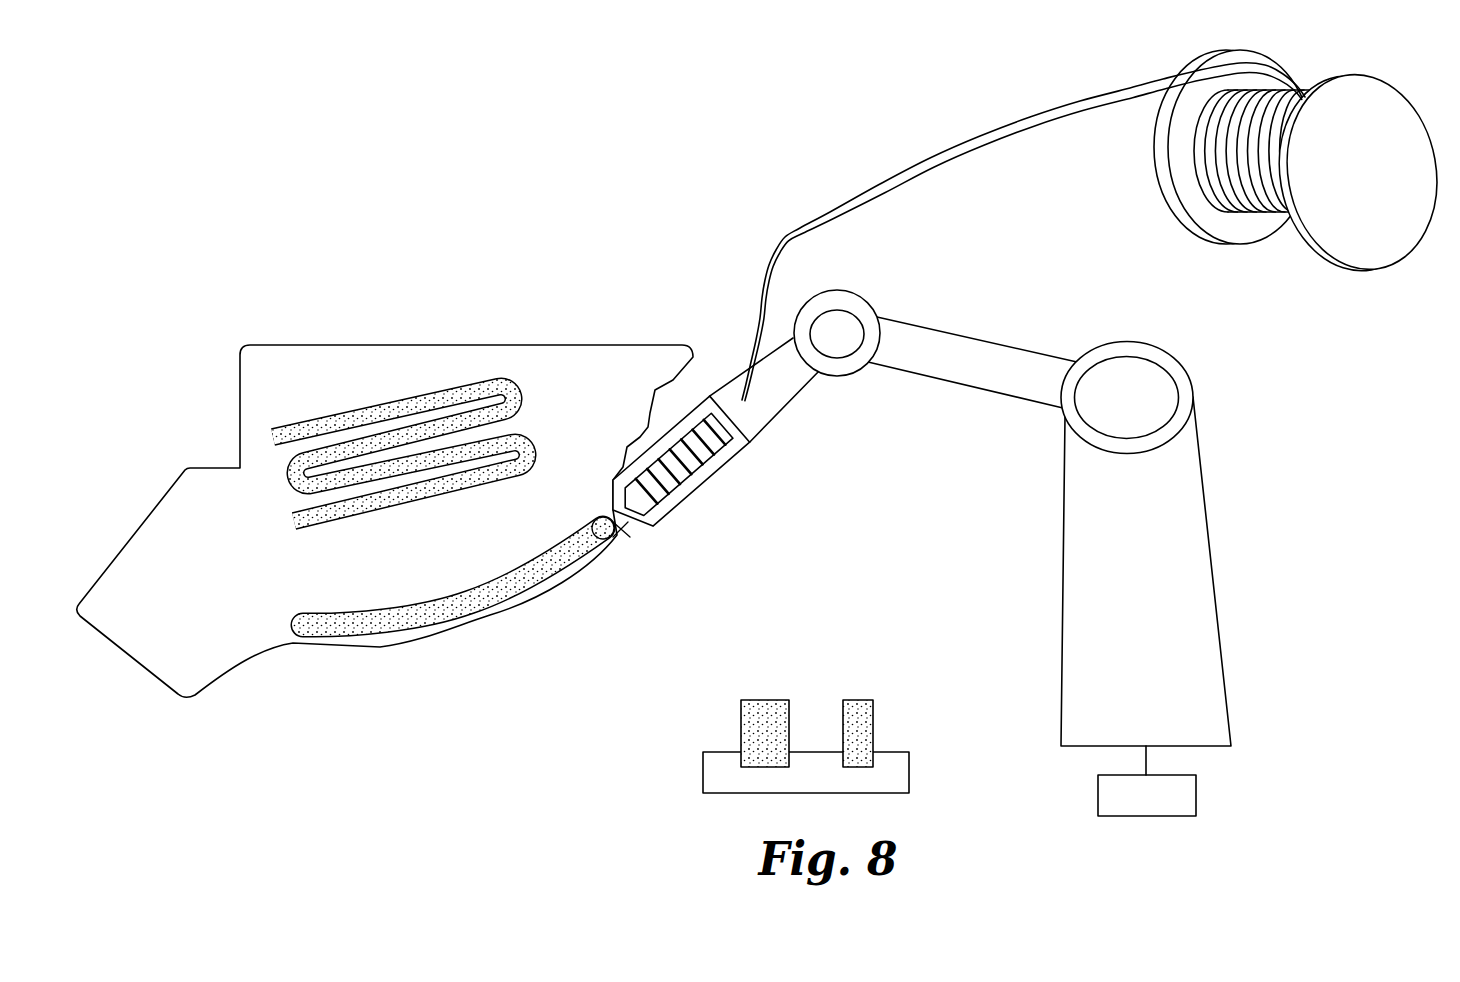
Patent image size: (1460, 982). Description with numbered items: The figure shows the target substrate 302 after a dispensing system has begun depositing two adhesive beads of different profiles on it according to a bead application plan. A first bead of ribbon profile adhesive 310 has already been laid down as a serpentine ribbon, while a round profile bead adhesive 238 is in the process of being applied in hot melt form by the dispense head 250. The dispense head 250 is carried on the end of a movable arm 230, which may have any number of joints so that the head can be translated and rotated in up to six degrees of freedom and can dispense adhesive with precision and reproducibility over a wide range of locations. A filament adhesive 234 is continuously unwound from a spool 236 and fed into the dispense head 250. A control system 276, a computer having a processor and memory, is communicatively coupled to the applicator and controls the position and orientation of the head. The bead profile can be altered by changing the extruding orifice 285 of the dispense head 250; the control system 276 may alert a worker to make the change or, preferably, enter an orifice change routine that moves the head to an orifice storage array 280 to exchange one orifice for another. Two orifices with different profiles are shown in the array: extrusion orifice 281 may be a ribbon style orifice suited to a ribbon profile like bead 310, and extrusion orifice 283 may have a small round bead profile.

The movable arm 230 is at (987, 360).
The filament adhesive 234 is at (803, 233).
The spool 236 is at (1400, 105).
The round profile bead adhesive 238 is at (520, 596).
The dispensing head 250 is at (683, 488).
The control system 276 is at (1128, 809).
The orifice storage array 280 is at (850, 712).
The extrusion orifice 281 is at (765, 708).
The extrusion orifice 283 is at (860, 708).
The extruding orifice 285 is at (613, 522).
The target substrate 302 is at (252, 636).
The ribbon profile adhesive bead 310 is at (507, 384).